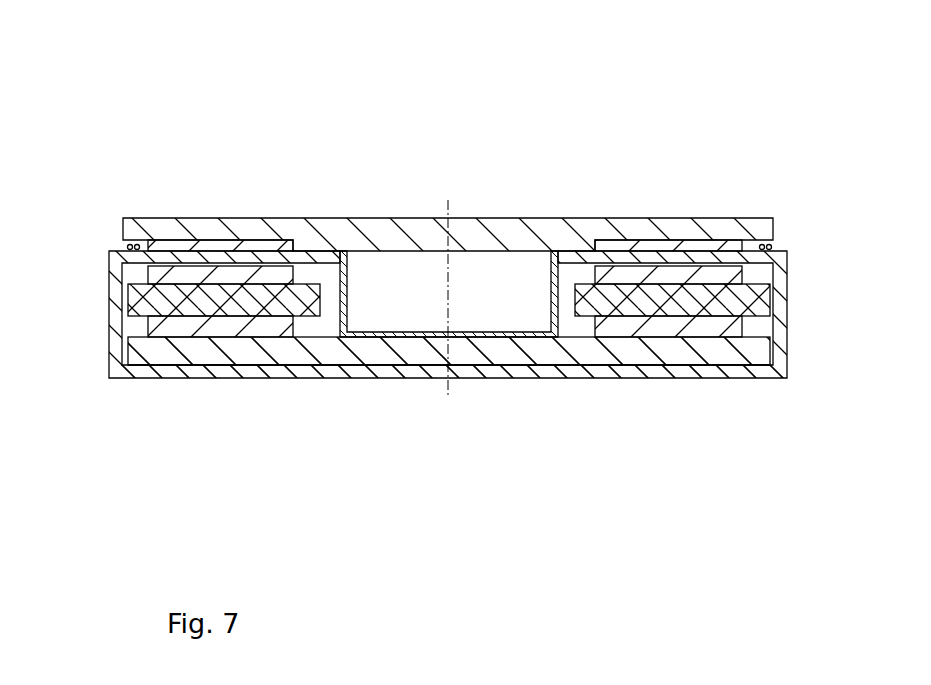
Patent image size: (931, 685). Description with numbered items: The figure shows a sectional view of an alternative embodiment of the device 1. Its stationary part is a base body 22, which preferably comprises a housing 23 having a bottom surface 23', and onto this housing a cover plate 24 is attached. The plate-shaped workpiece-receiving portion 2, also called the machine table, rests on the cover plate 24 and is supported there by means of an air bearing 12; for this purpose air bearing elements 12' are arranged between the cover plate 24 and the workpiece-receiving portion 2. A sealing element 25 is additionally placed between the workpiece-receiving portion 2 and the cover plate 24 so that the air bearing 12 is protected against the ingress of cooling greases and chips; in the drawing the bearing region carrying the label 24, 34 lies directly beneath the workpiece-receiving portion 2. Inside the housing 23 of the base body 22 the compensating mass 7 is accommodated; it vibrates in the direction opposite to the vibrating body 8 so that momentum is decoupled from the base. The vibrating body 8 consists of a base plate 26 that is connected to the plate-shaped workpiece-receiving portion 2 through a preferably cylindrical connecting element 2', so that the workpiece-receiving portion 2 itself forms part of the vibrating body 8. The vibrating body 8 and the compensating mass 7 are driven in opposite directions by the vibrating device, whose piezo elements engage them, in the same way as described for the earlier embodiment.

The device 1 is at (443, 274).
The plate-shaped workpiece-receiving portion 2 is at (448, 195).
The connecting element 2' is at (449, 238).
The compensating mass 7 is at (218, 300).
The vibrating body 8 is at (574, 378).
The air bearing 12 is at (90, 307).
The air bearing elements 12' is at (445, 221).
The base body 22 is at (481, 355).
The housing 23 is at (488, 418).
The bottom surface 23' is at (448, 421).
The cover plate 24 is at (445, 127).
The sealing element 25 is at (773, 243).
The base plate 26 is at (202, 352).
The contact layer 34 is at (201, 248).